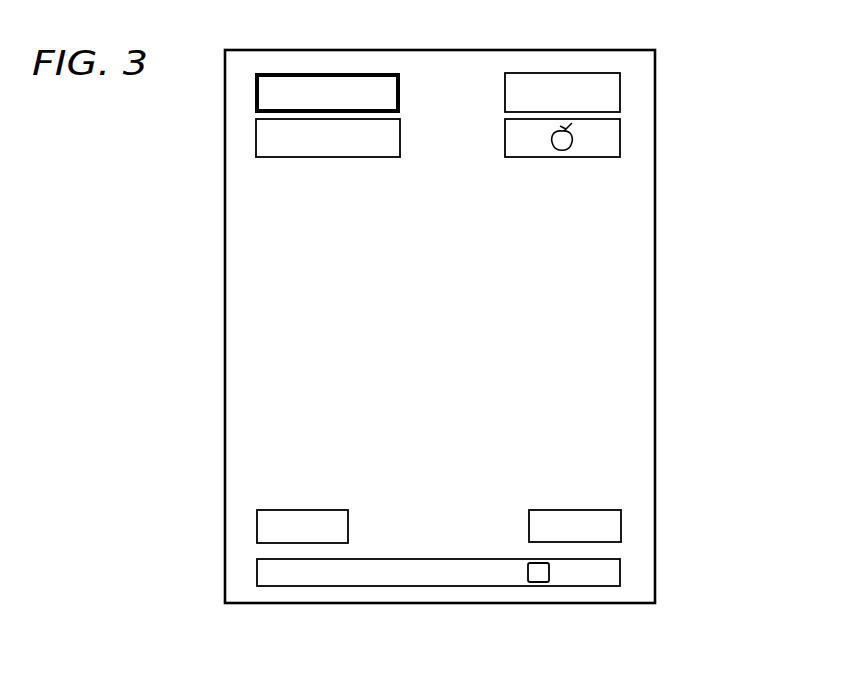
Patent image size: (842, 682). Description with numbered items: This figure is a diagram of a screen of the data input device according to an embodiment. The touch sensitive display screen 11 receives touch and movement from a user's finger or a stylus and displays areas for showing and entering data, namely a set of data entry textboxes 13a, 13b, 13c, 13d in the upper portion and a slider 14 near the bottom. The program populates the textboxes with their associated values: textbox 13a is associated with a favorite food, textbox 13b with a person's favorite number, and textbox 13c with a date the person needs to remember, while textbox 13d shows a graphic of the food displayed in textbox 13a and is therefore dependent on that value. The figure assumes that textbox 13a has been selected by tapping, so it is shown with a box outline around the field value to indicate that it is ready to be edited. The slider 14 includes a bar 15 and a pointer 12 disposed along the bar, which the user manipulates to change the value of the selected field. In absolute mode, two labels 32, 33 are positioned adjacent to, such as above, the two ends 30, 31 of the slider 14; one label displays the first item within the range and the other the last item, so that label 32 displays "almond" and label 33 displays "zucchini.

The touch sensitive display screen 11 is at (452, 50).
The pointer 12 is at (539, 586).
The textbox 13a is at (257, 96).
The textbox 13b is at (620, 95).
The textbox 13c is at (257, 142).
The textbox 13d is at (620, 139).
The slider 14 is at (621, 573).
The bar 15 is at (257, 580).
The end of slider 30 is at (253, 589).
The end of slider 31 is at (618, 588).
The label 32 is at (257, 538).
The label 33 is at (621, 527).